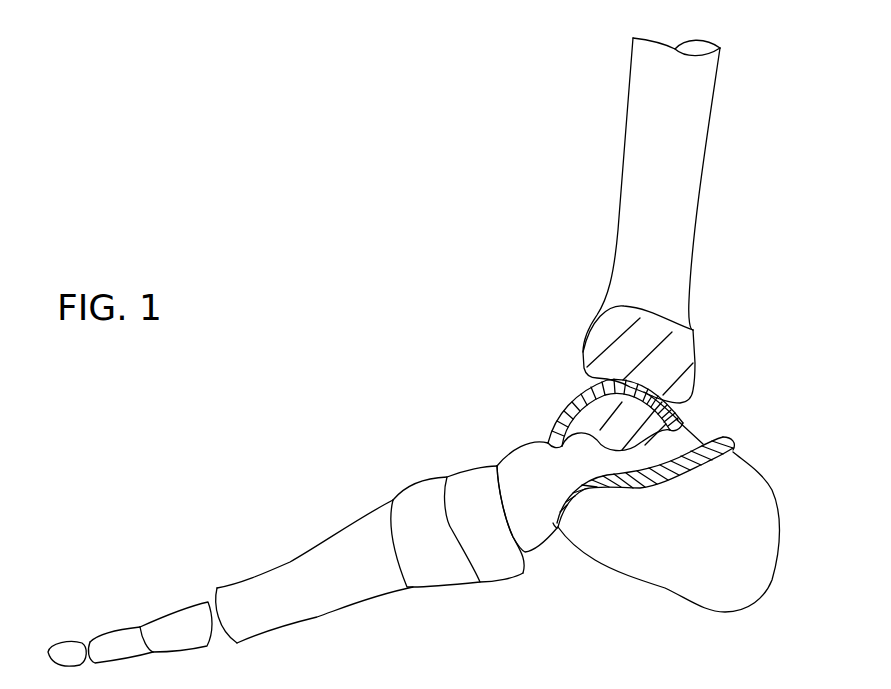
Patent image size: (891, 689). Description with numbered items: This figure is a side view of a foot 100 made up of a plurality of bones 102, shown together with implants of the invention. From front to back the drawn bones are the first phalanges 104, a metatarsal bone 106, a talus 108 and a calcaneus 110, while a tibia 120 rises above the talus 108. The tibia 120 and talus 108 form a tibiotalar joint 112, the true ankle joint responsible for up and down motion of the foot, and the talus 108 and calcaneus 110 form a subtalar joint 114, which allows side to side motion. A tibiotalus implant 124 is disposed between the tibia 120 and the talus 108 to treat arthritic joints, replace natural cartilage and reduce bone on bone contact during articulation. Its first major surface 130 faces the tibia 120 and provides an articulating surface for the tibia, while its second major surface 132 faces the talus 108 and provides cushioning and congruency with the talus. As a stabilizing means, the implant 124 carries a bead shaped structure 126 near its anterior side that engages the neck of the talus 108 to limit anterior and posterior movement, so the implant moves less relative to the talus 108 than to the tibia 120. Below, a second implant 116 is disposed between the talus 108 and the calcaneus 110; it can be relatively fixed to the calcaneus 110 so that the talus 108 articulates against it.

The foot 100 is at (367, 342).
The bones 102 is at (385, 410).
The first phalanges 104 is at (112, 631).
The metatarsal bone 106 is at (313, 567).
The talus 108 is at (517, 460).
The calcaneus 110 is at (763, 469).
The tibiotalar joint 112 is at (690, 427).
The subtalar joint 114 is at (555, 536).
The second implant 116 is at (698, 506).
The tibia 120 is at (634, 200).
The tibiotalus implant 124 is at (640, 391).
The bead shaped structure 126 is at (543, 434).
The first major surface 130 is at (686, 406).
The second major surface 132 is at (683, 415).